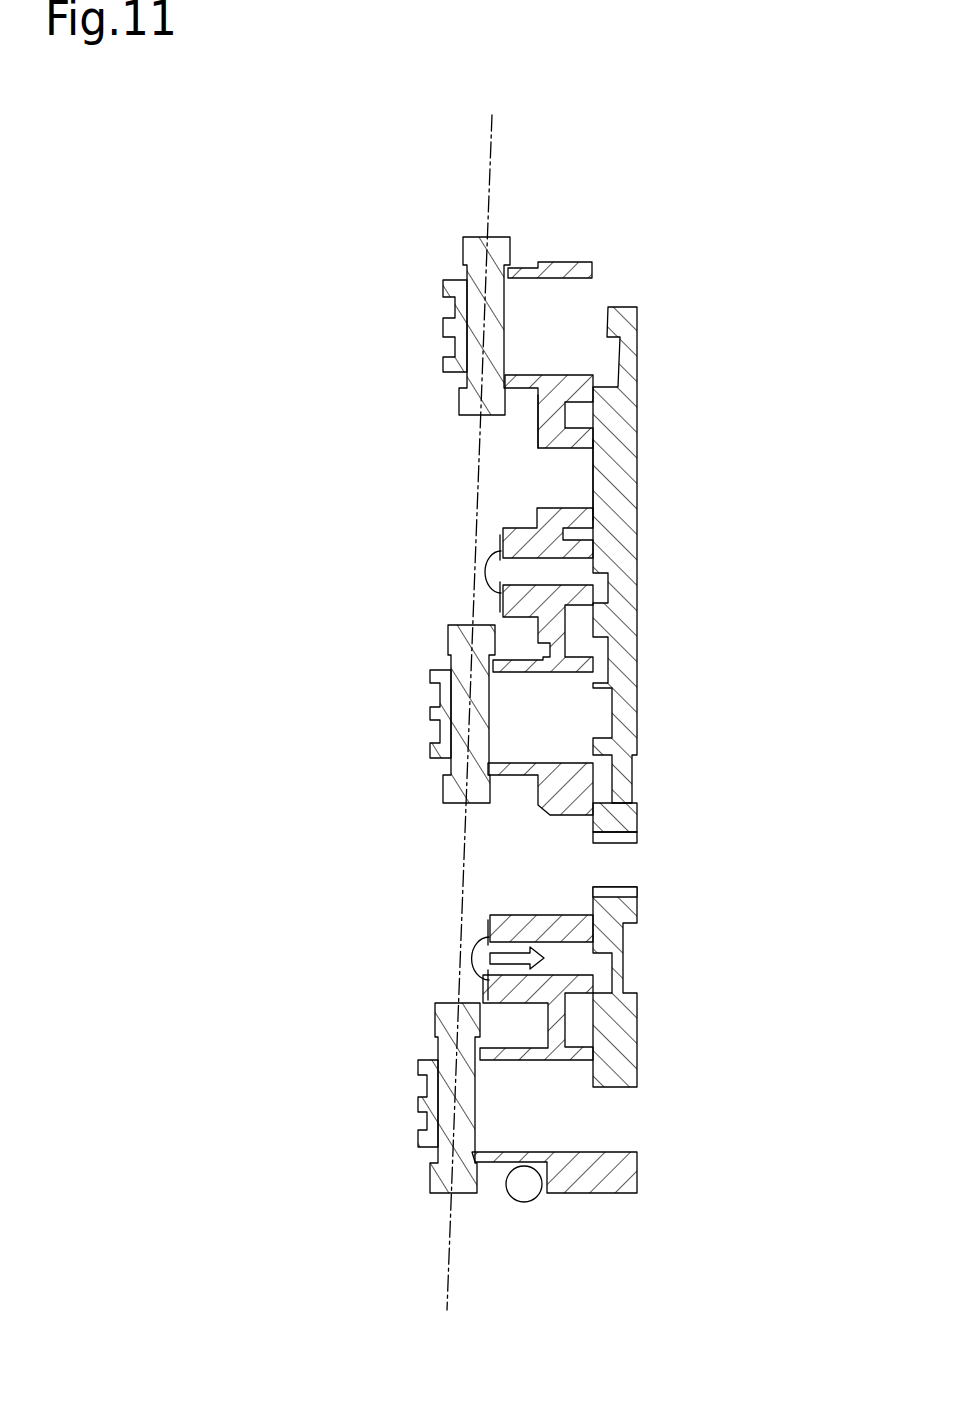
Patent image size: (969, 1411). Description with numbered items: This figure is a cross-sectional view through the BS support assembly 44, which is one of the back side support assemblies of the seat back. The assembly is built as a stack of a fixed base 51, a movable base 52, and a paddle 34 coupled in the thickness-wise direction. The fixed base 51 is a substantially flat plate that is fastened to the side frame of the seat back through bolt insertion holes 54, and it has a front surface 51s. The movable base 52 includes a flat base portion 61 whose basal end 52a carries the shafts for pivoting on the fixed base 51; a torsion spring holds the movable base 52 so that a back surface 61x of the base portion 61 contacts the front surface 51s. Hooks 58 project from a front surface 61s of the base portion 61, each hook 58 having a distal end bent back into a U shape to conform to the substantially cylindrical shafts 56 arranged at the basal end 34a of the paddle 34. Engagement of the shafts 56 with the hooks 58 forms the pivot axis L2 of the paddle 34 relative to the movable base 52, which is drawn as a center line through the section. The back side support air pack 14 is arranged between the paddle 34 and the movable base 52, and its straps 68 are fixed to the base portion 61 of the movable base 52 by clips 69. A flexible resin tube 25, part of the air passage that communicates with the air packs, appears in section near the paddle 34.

The BS support assembly 44 is at (194, 173).
The pivot axis L2 is at (490, 148).
The movable base 52 is at (586, 233).
The basal end 52a is at (572, 262).
The fixed base 51 is at (640, 307).
The front surface 51s is at (580, 475).
The base portion 61 is at (642, 411).
The back surface 61x is at (612, 395).
The front surface 61s is at (540, 433).
The strap 68 is at (457, 784).
The back side support air pack 14 is at (500, 527).
The clip 69 is at (487, 570).
The shaft 56 is at (505, 330).
The hook 58 is at (443, 322).
The bolt insertion hole 54 is at (615, 848).
The paddle 34 is at (449, 1184).
The basal end 34a is at (432, 1190).
The tube 25 is at (520, 1203).